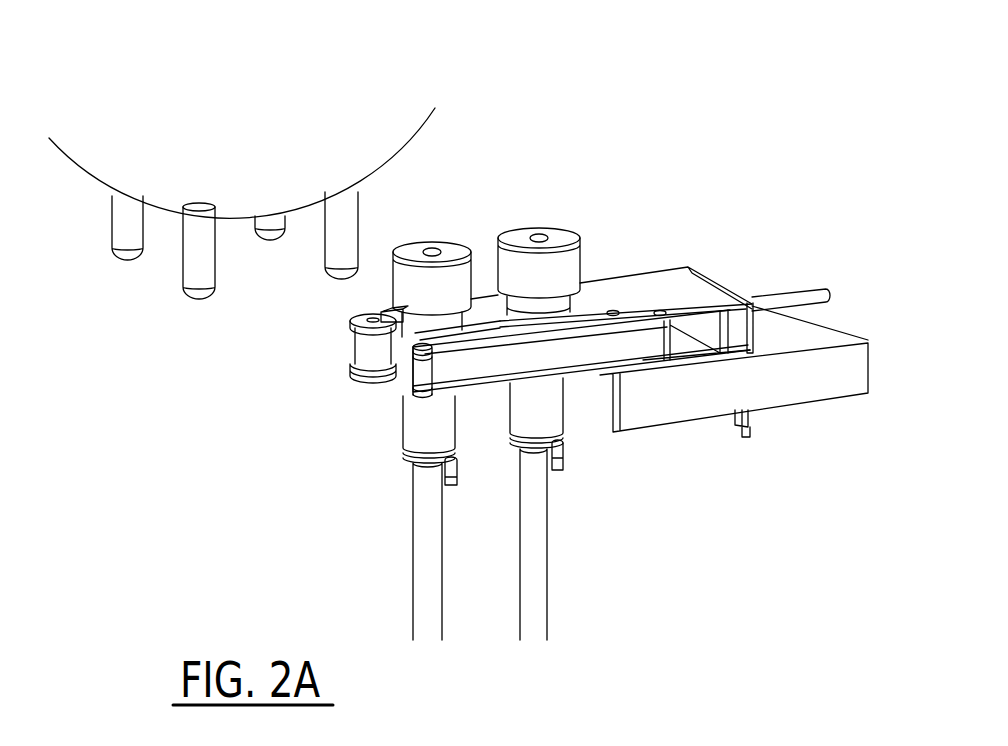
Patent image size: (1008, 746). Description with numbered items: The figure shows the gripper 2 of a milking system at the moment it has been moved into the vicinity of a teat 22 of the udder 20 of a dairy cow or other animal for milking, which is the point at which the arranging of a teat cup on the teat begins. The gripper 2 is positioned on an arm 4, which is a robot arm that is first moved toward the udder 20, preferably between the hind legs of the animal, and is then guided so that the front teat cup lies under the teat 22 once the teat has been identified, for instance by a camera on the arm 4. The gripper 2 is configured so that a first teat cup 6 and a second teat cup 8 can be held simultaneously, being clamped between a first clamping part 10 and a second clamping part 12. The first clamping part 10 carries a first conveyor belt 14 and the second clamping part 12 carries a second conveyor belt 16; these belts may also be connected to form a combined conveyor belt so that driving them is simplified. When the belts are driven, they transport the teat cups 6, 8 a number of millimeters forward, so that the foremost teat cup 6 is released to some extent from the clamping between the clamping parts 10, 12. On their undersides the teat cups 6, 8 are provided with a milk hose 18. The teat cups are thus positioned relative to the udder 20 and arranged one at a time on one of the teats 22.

The gripper 2 is at (733, 180).
The arm 4 is at (665, 405).
The first teat cup 6 is at (442, 190).
The second teat cup 8 is at (549, 190).
The first clamping part 10 is at (373, 312).
The second clamping part 12 is at (475, 393).
The first conveyor belt 14 is at (365, 348).
The second conveyor belt 16 is at (587, 353).
The milk hose 18 is at (427, 565).
The udder 20 is at (283, 133).
The teat 22 is at (343, 232).